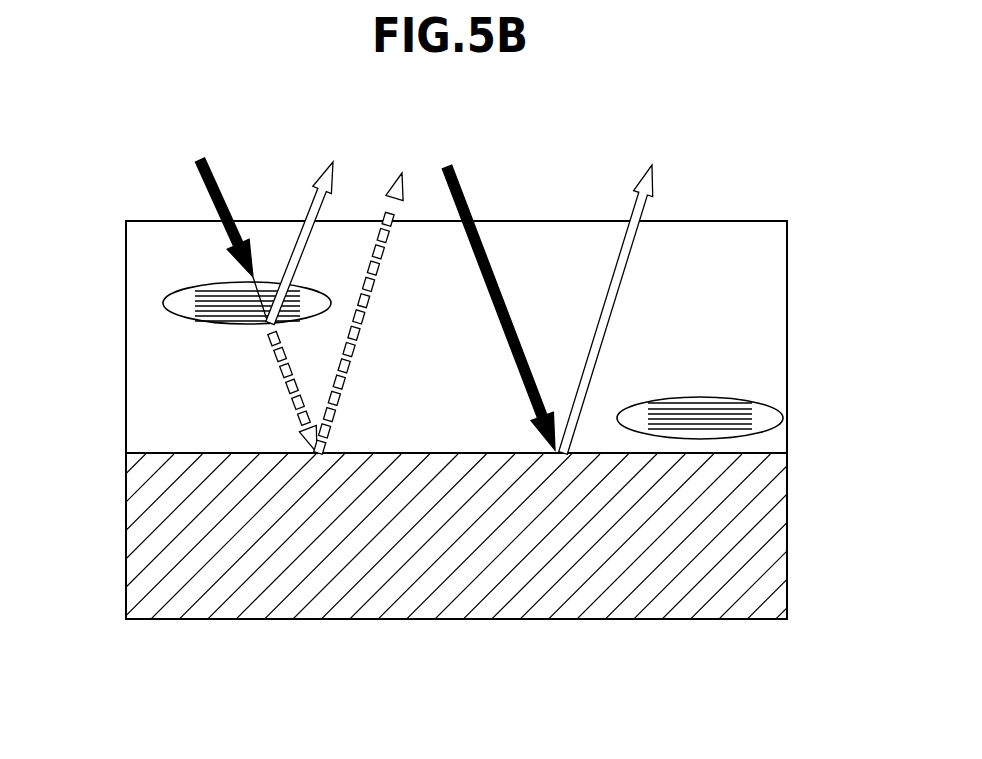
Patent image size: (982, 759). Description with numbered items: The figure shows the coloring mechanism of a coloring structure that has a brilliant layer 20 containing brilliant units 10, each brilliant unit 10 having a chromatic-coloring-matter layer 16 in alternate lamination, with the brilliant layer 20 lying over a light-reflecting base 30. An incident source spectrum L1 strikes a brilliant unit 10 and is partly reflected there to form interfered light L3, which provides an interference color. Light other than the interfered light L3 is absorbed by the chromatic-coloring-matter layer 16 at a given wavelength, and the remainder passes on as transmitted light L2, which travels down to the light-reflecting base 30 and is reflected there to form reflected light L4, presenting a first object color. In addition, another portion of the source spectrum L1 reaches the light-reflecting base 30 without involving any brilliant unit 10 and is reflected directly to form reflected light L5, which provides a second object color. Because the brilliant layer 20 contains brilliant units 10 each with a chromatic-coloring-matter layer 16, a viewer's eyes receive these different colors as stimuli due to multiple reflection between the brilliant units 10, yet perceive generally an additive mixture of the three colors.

The brilliant unit 10 is at (177, 303).
The chromatic-coloring-matter layer 16 is at (208, 320).
The brilliant layer 20 is at (747, 342).
The light-reflecting base 30 is at (740, 598).
The incident source spectrum L1 is at (363, 304).
The transmitted light L2 is at (283, 392).
The interfered light L3 is at (314, 220).
The reflected light L4 is at (378, 289).
The reflected light L5 is at (622, 285).